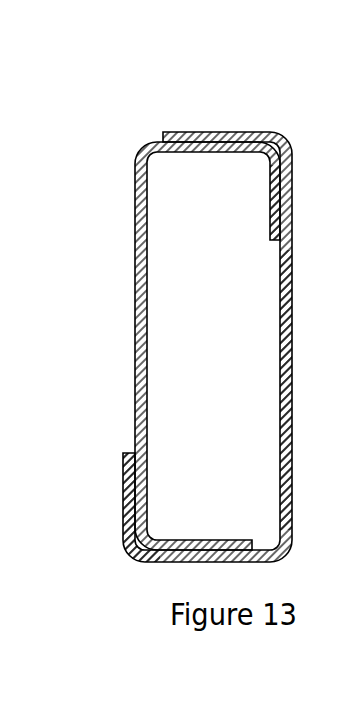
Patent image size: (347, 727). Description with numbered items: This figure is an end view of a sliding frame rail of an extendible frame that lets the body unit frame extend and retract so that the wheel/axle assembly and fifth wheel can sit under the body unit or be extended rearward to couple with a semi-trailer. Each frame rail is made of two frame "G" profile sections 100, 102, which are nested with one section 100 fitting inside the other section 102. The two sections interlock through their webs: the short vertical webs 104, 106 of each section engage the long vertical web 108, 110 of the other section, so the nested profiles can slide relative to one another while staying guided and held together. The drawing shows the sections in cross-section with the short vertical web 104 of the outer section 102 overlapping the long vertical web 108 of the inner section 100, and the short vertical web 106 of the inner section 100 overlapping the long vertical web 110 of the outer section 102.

The frame "G" profile section 100 is at (186, 321).
The frame "G" profile section 102 is at (190, 321).
The short vertical web 104 is at (123, 492).
The short vertical web 106 is at (268, 207).
The long vertical web 108 is at (161, 295).
The long vertical web 110 is at (278, 350).